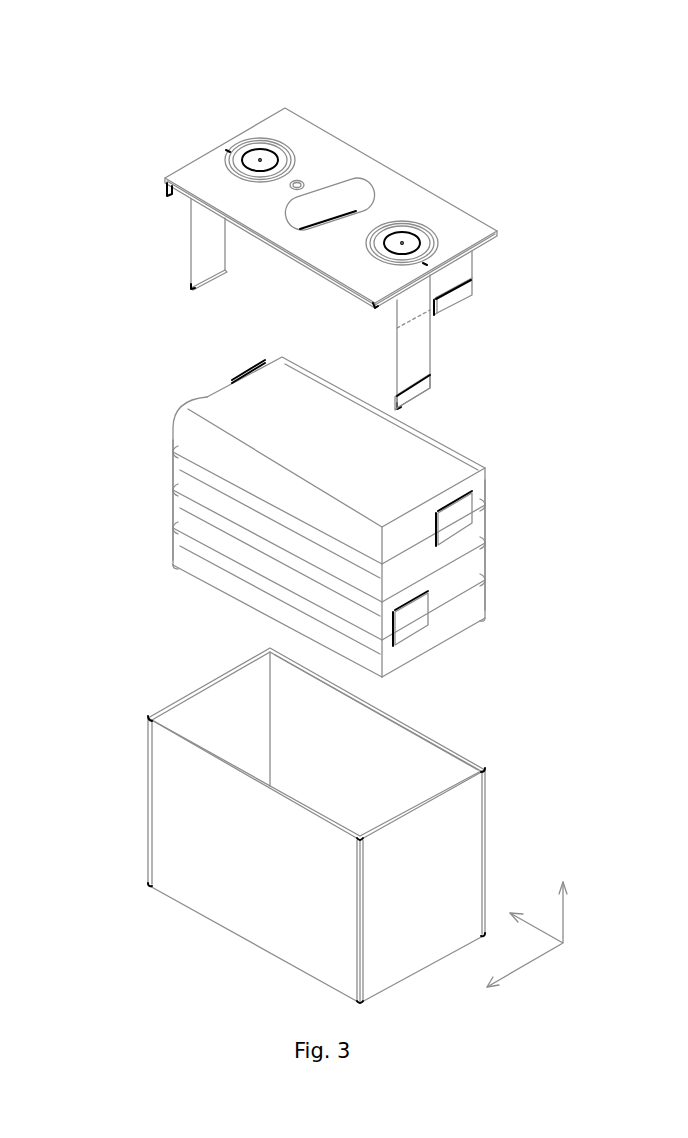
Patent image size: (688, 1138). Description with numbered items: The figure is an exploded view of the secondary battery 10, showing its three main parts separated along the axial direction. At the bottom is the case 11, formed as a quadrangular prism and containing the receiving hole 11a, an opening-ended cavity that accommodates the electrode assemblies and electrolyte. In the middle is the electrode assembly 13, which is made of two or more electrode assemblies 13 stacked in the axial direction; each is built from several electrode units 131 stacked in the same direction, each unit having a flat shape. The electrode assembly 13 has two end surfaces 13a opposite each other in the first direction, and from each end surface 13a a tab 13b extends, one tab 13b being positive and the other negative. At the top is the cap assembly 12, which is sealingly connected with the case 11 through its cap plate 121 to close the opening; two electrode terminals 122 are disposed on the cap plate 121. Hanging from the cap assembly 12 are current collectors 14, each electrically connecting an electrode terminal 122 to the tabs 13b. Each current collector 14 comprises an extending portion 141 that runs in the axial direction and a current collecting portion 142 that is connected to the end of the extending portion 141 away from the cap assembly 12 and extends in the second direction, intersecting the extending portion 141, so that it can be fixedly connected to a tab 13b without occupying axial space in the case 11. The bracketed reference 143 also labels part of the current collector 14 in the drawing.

The secondary battery 10 is at (370, 41).
The case 11 is at (280, 893).
The receiving hole 11a is at (428, 773).
The cap assembly 12 is at (330, 118).
The cap plate 121 is at (357, 170).
The electrode terminal 122 is at (260, 160).
The electrode assembly 13 is at (157, 458).
The electrode unit 131 is at (312, 500).
The end surface 13a is at (202, 396).
The tab 13b is at (457, 512).
The current collector 14 is at (206, 235).
The extending portion 141 is at (415, 345).
The current collecting portion 142 is at (462, 292).
The bracket connecting portion 143 is at (462, 272).